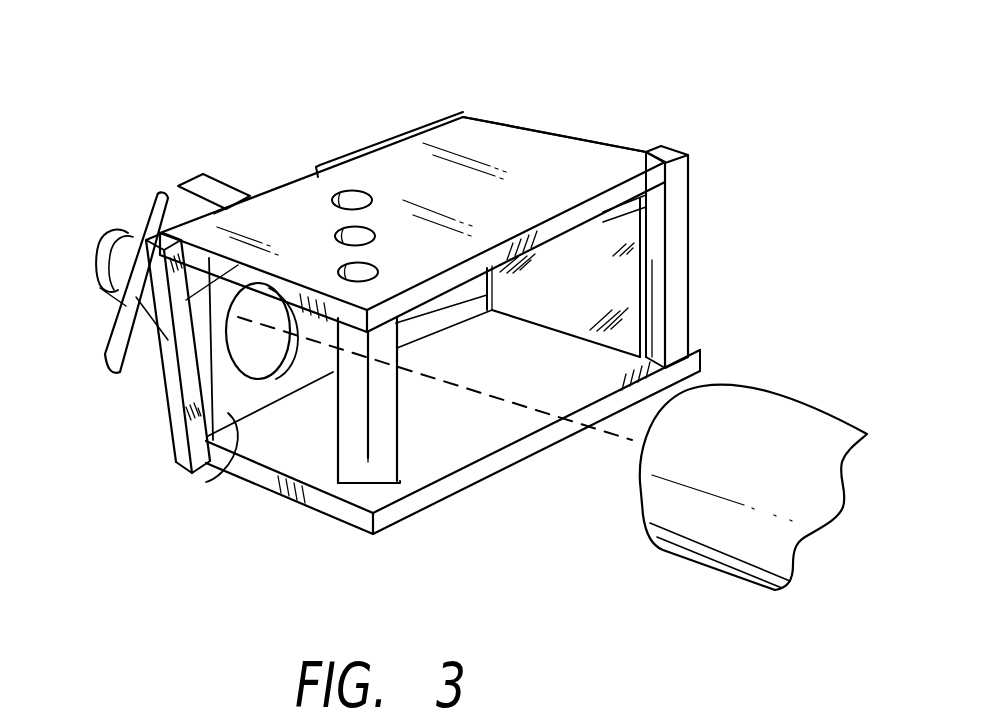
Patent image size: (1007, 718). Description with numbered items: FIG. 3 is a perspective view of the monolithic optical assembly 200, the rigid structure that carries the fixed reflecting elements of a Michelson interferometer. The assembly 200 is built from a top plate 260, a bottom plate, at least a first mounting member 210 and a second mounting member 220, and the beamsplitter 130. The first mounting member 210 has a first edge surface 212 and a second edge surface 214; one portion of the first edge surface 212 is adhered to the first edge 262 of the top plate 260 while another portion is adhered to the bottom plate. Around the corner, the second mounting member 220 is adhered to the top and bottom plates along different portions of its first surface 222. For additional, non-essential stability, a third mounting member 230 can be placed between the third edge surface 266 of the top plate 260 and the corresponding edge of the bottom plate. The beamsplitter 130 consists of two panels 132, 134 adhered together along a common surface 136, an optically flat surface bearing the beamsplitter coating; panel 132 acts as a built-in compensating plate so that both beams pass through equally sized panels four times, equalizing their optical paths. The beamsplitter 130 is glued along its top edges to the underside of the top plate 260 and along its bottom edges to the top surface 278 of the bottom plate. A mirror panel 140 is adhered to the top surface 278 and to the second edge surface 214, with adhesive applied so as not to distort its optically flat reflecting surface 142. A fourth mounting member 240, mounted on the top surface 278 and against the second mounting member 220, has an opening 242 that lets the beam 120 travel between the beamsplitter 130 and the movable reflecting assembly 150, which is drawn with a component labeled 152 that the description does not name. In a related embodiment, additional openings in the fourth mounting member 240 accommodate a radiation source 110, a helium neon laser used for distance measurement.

The radiation source 110 is at (827, 418).
The beam 120 is at (603, 430).
The beamsplitter 130 is at (386, 462).
The panel 132 is at (383, 444).
The panel 134 is at (346, 465).
The common surface 136 is at (322, 526).
The mirror panel 140 is at (687, 276).
The reflecting surface 142 is at (605, 302).
The movable reflecting assembly 150 is at (239, 160).
The lever 152 is at (173, 186).
The monolithic optical assembly 200 is at (412, 177).
The first mounting member 210 is at (723, 261).
The first edge surface 212 is at (654, 282).
The second edge surface 214 is at (701, 214).
The second mounting member 220 is at (389, 127).
The first surface 222 is at (434, 308).
The third mounting member 230 is at (140, 354).
The fourth mounting member 240 is at (236, 468).
The opening 242 is at (241, 412).
The top plate 260 is at (417, 150).
The first edge 262 is at (554, 119).
The third edge surface 266 is at (118, 322).
The top surface 278 is at (473, 437).